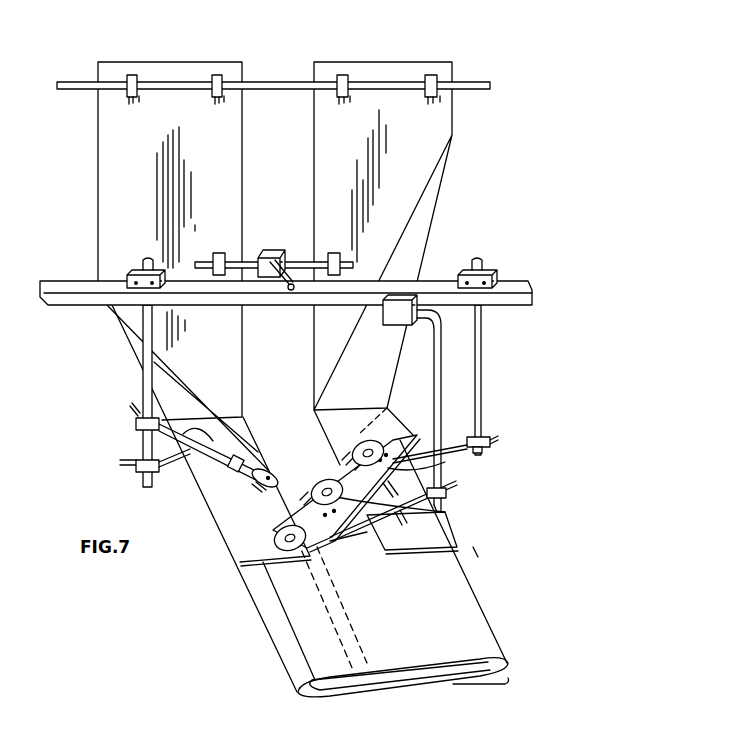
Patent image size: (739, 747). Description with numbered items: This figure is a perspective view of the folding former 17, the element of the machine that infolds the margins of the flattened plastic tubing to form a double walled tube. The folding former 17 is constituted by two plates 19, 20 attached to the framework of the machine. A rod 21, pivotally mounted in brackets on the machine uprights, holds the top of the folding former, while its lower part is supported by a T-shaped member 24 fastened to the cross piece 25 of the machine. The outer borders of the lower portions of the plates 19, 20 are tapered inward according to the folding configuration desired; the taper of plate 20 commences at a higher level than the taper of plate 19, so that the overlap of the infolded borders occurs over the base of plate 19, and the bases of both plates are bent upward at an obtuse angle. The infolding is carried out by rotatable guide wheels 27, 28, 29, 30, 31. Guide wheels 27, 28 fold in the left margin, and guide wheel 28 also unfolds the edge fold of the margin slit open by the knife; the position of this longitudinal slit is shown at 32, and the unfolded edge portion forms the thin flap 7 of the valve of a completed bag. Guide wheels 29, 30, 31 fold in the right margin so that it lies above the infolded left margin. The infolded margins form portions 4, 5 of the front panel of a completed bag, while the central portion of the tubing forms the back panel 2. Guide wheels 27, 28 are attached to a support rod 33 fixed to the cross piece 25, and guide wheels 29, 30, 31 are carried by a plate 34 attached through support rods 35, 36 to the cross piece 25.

The folding former 17 is at (148, 46).
The rod 21 is at (272, 80).
The plate 19 is at (100, 152).
The plate 20 is at (440, 135).
The T-shaped member 24 is at (296, 256).
The cross piece 25 is at (68, 280).
The longitudinal slit 32 is at (140, 352).
The support rod 33 is at (140, 438).
The guide wheel 27 is at (200, 452).
The guide wheel 28 is at (275, 472).
The guide wheel 29 is at (283, 545).
The plate 34 is at (455, 536).
The support rod 36 is at (483, 386).
The support rod 35 is at (443, 419).
The guide wheel 31 is at (388, 468).
The guide wheel 30 is at (445, 510).
The portion of front panel 5 is at (448, 635).
The portion of front panel 4 is at (292, 660).
The back panel 2 is at (453, 684).
The thin flap 7 is at (367, 683).